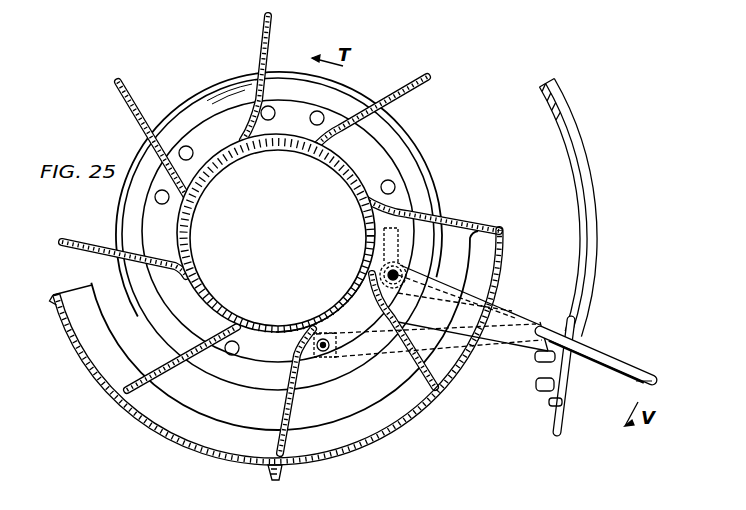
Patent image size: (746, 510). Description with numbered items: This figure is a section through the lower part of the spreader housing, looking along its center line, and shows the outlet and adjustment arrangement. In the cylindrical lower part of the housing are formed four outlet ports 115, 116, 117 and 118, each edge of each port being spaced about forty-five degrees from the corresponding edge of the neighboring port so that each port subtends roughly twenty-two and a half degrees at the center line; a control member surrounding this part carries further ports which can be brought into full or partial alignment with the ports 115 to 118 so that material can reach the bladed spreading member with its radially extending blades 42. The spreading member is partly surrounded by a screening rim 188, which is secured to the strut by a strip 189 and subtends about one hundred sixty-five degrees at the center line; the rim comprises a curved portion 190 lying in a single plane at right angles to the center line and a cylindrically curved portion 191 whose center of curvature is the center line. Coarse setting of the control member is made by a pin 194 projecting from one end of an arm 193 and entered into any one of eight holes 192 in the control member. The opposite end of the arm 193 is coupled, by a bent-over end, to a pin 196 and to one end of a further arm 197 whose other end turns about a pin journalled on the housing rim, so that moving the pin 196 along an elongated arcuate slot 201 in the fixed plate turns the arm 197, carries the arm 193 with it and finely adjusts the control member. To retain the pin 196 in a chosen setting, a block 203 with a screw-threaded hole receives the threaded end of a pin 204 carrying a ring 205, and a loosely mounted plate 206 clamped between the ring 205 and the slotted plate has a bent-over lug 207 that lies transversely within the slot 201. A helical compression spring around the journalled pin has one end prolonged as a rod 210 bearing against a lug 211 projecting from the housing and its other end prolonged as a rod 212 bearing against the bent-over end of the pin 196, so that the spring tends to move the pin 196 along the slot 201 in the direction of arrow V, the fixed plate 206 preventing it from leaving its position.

The blades 42 is at (419, 91).
The outlet port 115 is at (372, 262).
The outlet port 116 is at (328, 314).
The outlet port 117 is at (255, 325).
The outlet port 118 is at (199, 285).
The screening rim 188 is at (84, 368).
The strip 189 is at (284, 478).
The curved portion 190 is at (74, 290).
The cylindrically curved portion 191 is at (55, 301).
The holes 192 is at (180, 161).
The arm 193 is at (483, 366).
The pin 194 is at (329, 358).
The pin 196 is at (638, 369).
The arm 197 is at (522, 316).
The elongated arcuate slot 201 is at (580, 207).
The block 203 is at (540, 362).
The pin 204 is at (571, 383).
The ring 205 is at (554, 404).
The loosely mounted plate 206 is at (546, 396).
The bent-over lug 207 is at (573, 347).
The rod 210 is at (407, 214).
The lug 211 is at (381, 241).
The rod 212 is at (514, 318).